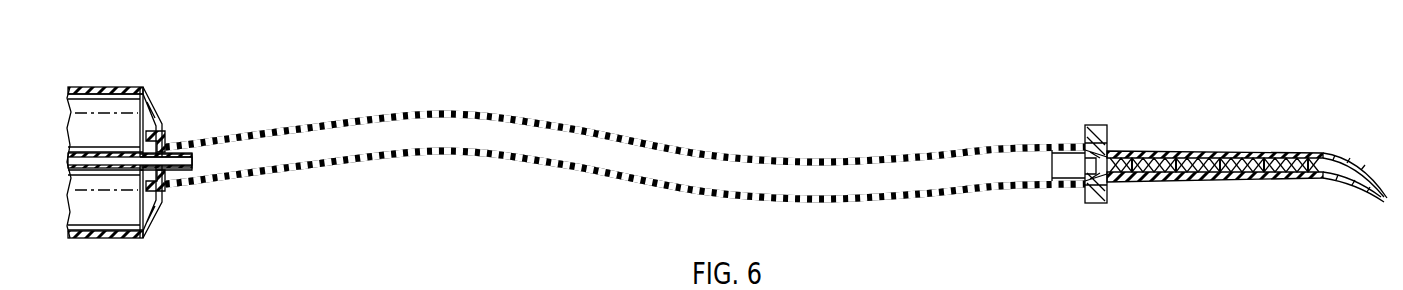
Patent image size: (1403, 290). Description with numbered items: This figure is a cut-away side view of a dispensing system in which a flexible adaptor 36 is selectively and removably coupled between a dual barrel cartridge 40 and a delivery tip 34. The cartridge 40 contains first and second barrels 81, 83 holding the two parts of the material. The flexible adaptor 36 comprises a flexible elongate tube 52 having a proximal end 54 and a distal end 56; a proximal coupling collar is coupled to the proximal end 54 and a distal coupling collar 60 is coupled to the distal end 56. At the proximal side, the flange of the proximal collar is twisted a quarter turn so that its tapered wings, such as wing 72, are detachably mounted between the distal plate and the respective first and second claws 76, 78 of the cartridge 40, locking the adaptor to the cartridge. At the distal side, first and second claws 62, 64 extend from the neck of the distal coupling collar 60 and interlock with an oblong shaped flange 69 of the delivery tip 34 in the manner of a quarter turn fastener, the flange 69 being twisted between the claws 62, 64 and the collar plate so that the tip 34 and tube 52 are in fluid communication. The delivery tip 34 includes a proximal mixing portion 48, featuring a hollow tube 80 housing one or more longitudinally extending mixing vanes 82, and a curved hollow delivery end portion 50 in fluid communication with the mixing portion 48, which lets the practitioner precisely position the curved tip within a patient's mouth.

The delivery tip 34 is at (1208, 142).
The flexible adaptor 36 is at (712, 104).
The dual barrel cartridge 40 is at (138, 72).
The proximal mixing portion 48 is at (1228, 178).
The curved hollow delivery end portion 50 is at (1352, 162).
The flexible elongate tube 52 is at (448, 111).
The proximal end 54 is at (300, 122).
The distal end 56 is at (1006, 142).
The distal coupling collar 60 is at (1093, 207).
The first claw 62 is at (1104, 190).
The second claw 64 is at (1106, 128).
The oblong shaped flange 69 is at (1108, 178).
The wing 72 is at (152, 195).
The first claw 76 is at (167, 128).
The second claw 78 is at (166, 190).
The hollow tube 80 is at (1290, 178).
The first barrel 81 is at (91, 140).
The mixing vanes 82 is at (1276, 160).
The second barrel 83 is at (91, 215).